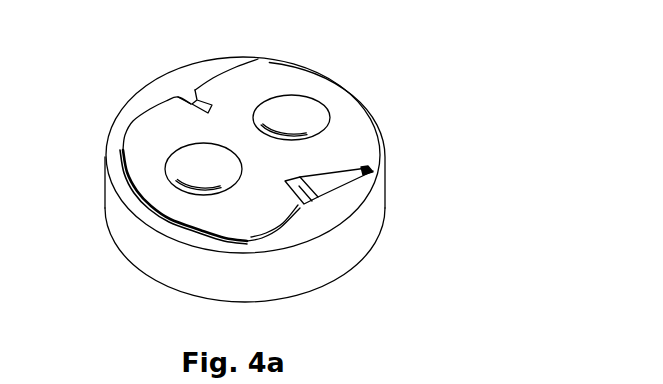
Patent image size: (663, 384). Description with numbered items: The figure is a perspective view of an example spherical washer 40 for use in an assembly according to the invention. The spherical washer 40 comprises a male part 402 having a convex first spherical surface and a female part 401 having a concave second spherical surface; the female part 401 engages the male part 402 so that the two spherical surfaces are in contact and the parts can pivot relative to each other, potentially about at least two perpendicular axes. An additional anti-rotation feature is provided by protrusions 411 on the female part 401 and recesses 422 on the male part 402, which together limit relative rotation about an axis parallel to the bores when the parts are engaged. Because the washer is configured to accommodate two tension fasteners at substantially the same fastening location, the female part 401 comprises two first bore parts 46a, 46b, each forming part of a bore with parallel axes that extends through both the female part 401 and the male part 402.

The spherical washer 40 is at (259, 159).
The female part 401 is at (160, 252).
The male part 402 is at (263, 80).
The protrusions 411 is at (190, 102).
The recesses 422 is at (300, 183).
The first bore part 46a is at (203, 168).
The first bore part 46b is at (297, 119).